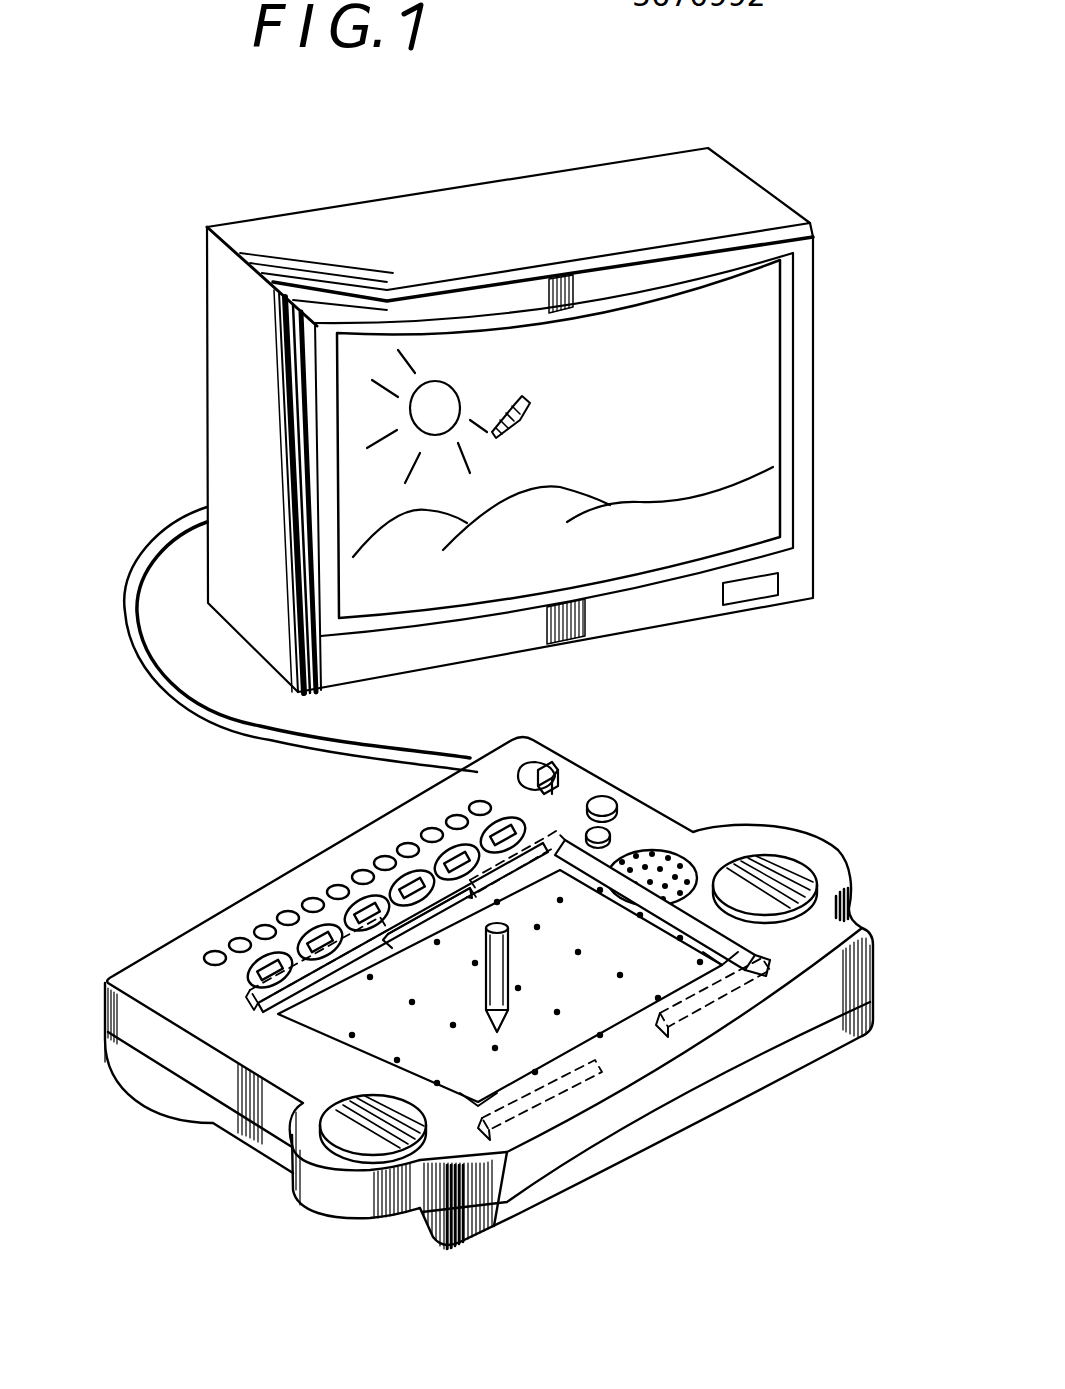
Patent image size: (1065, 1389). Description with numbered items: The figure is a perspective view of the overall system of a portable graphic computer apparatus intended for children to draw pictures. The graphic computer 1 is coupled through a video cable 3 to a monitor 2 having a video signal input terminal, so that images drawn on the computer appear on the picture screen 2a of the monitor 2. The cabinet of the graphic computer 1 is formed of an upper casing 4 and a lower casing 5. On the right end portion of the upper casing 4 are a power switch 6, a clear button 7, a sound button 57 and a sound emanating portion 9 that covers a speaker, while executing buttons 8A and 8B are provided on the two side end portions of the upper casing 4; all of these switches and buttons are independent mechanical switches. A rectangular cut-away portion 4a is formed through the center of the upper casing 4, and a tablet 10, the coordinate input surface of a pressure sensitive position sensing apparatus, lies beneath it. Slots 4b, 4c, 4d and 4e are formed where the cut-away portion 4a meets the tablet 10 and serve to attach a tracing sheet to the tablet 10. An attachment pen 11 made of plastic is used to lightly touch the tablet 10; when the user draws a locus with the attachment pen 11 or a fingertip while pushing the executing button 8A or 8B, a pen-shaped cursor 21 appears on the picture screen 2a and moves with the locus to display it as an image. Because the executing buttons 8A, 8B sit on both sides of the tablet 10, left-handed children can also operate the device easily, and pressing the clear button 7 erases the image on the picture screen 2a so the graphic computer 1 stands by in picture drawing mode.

The graphic computer 1 is at (283, 1190).
The monitor 2 is at (210, 390).
The picture screen 2a is at (765, 318).
The video cable 3 is at (150, 672).
The upper casing 4 is at (118, 1015).
The rectangular cut-away portion 4a is at (300, 1015).
The slot 4b is at (345, 981).
The slot 4c is at (515, 882).
The slot 4d is at (557, 1130).
The slot 4e is at (735, 1010).
The lower casing 5 is at (122, 1078).
The power switch 6 is at (548, 778).
The clear button 7 is at (614, 805).
The sound button 57 is at (610, 830).
The executing button 8A is at (363, 1130).
The executing button 8B is at (797, 870).
The sound emanating portion 9 is at (688, 857).
The tablet 10 is at (617, 1013).
The attachment pen 11 is at (508, 966).
The pen-shaped cursor 21 is at (520, 412).